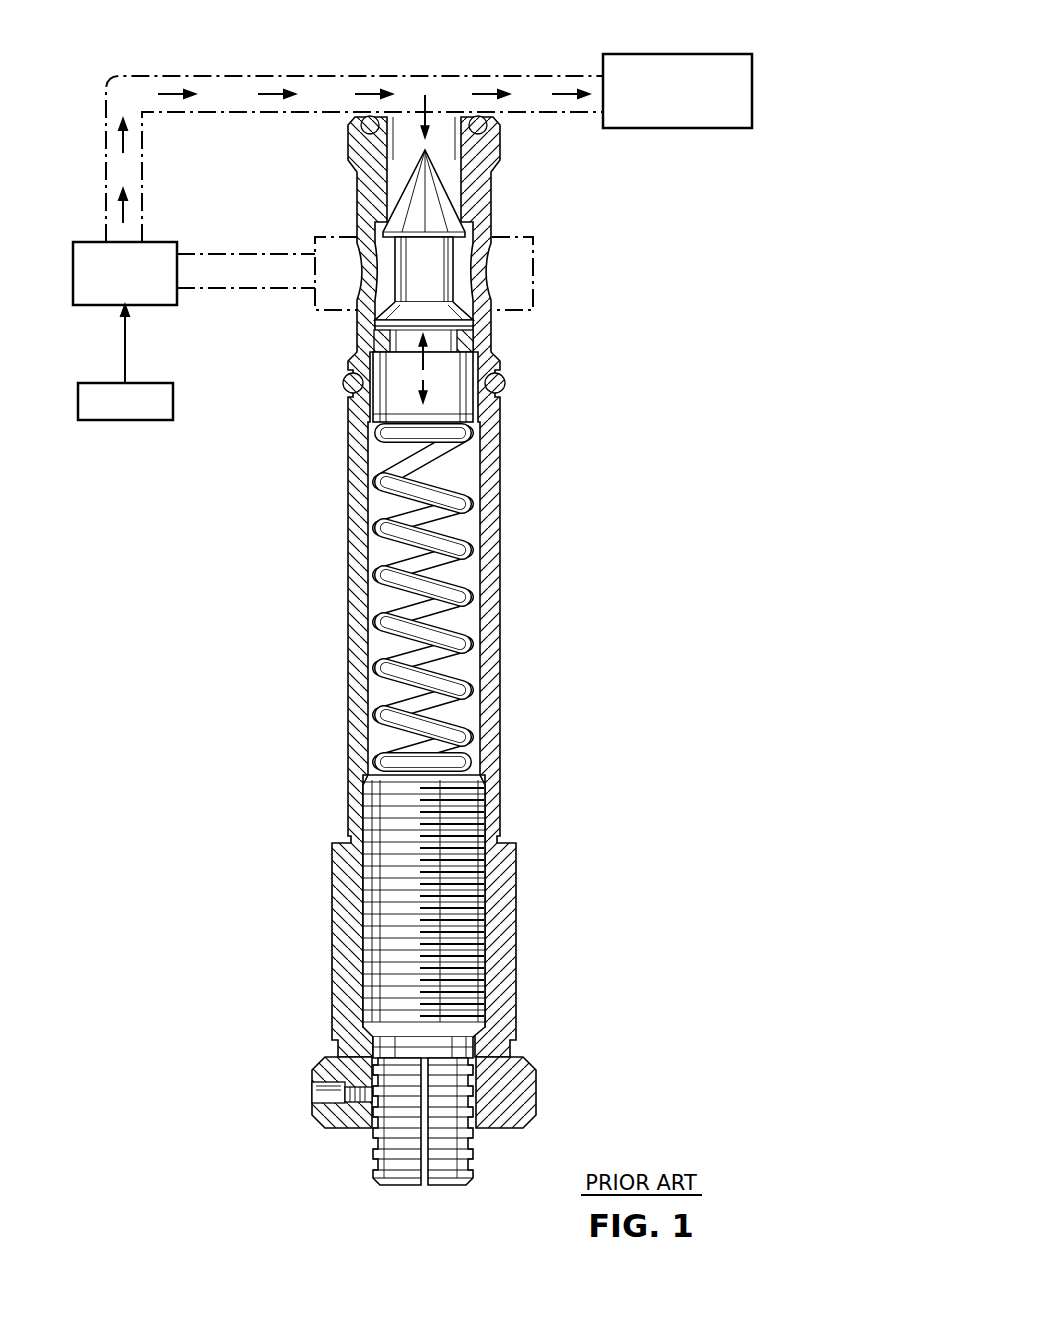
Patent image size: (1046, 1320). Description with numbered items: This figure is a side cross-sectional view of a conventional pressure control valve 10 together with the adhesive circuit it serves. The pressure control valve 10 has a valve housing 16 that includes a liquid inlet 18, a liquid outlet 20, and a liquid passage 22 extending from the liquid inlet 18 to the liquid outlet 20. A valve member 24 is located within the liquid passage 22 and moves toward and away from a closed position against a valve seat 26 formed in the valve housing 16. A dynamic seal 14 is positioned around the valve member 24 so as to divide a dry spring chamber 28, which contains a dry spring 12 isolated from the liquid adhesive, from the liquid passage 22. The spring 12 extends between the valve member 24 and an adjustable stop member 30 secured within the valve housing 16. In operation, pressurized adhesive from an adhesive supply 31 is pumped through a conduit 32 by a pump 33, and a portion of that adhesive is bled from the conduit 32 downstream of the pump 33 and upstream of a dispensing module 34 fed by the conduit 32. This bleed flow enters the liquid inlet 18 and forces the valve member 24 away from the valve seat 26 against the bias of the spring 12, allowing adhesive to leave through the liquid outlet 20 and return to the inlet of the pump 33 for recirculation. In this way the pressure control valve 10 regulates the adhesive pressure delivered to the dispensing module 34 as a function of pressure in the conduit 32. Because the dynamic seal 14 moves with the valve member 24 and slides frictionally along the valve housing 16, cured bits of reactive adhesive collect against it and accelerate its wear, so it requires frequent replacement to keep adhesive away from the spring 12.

The pressure control valve 10 is at (698, 211).
The dry spring 12 is at (466, 628).
The dynamic seal 14 is at (475, 341).
The valve housing 16 is at (348, 549).
The liquid inlet 18 is at (448, 135).
The liquid outlet 20 is at (360, 288).
The liquid passage 22 is at (468, 233).
The valve member 24 is at (396, 252).
The valve seat 26 is at (460, 218).
The dry spring chamber 28 is at (470, 526).
The adjustable stop member 30 is at (365, 798).
The adhesive supply 31 is at (90, 383).
The conduit 32 is at (197, 75).
The pump 33 is at (90, 242).
The dispensing module 34 is at (752, 82).